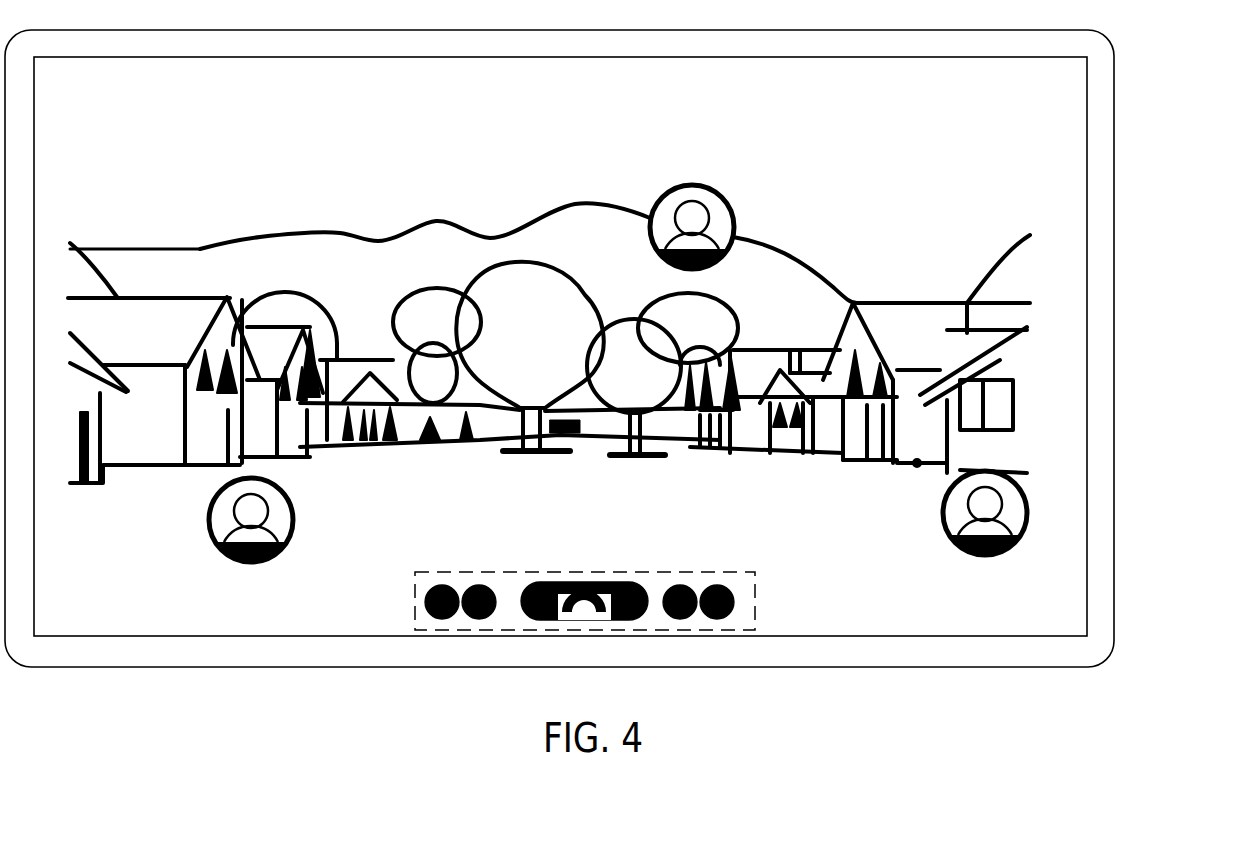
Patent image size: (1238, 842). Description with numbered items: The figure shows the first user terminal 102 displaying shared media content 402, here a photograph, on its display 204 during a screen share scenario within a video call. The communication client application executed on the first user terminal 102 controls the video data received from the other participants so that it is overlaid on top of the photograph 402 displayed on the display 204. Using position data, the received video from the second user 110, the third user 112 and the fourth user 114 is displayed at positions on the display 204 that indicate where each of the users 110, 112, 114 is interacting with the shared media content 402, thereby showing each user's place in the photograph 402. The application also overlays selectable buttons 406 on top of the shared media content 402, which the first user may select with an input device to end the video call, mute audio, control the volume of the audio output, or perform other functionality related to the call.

The first user terminal 102 is at (1113, 117).
The display 204 is at (1088, 298).
The shared media content (photograph) 402 is at (215, 176).
The second user 110 is at (686, 184).
The third user 112 is at (212, 537).
The fourth user 114 is at (997, 471).
The selectable buttons 406 is at (756, 596).